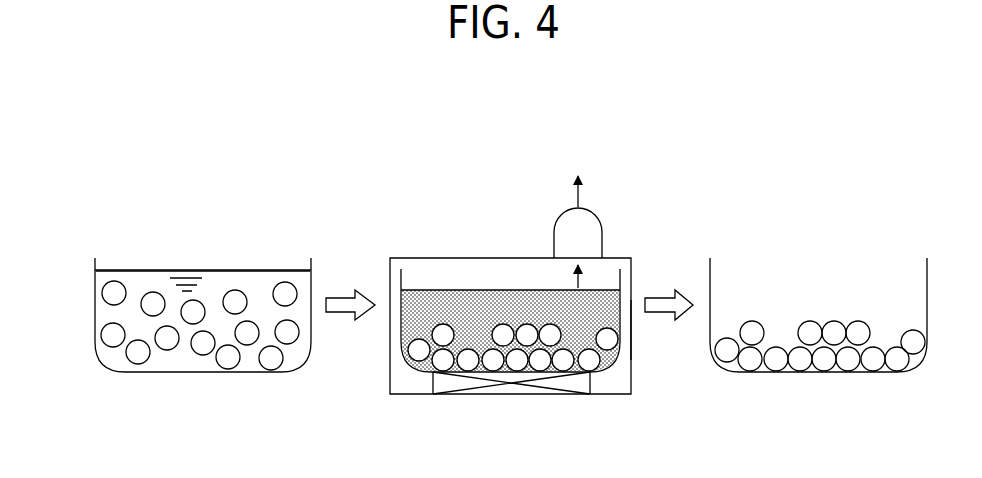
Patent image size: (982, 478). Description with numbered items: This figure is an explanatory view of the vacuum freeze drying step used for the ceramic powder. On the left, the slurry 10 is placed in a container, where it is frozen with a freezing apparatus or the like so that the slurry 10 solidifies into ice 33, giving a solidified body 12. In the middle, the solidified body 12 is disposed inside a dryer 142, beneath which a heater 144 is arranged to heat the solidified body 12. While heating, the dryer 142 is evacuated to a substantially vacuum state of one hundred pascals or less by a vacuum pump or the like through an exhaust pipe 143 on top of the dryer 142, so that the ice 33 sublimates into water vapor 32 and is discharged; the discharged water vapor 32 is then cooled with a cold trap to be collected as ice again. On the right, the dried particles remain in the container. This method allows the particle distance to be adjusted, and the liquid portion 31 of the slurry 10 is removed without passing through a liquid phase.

The slurry 10 is at (165, 264).
The solidified body 12 is at (423, 284).
The liquid 31 is at (245, 283).
The water vapor 32 is at (572, 280).
The ice 33 is at (448, 290).
The dryer 142 is at (390, 273).
The exhaust pipe 143 is at (553, 238).
The heater 144 is at (593, 382).